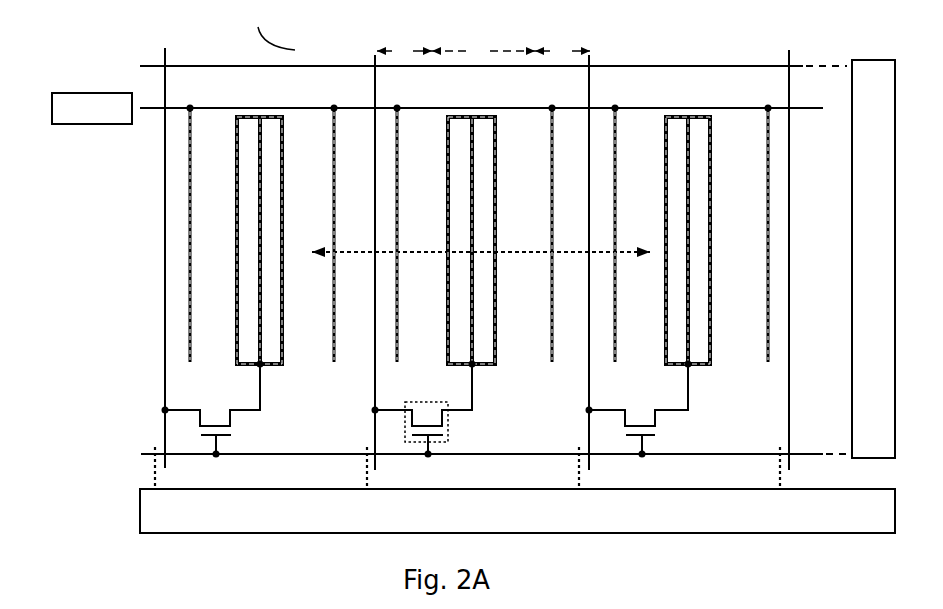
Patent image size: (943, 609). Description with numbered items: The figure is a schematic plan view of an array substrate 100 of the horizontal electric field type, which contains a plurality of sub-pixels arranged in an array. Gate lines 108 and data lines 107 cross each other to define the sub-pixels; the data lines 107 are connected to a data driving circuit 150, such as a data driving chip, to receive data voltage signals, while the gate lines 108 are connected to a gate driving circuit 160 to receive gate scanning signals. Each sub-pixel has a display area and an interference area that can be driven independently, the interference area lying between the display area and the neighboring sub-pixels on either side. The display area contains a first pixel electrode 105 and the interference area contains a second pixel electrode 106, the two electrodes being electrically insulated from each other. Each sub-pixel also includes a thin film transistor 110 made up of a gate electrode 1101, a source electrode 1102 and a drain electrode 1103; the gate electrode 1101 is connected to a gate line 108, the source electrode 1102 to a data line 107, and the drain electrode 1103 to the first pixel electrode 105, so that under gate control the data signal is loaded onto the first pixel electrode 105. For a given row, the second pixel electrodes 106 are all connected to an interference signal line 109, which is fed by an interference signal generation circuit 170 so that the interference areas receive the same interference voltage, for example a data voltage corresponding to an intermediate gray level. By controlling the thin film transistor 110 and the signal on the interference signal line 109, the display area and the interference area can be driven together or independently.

The array substrate 100 is at (467, 251).
The data line 107 is at (165, 187).
The gate line 108 is at (503, 260).
The interference signal line 109 is at (425, 108).
The interference signal generation circuit 170 is at (92, 108).
The gate driving circuit 160 is at (873, 259).
The data driving circuit 150 is at (517, 511).
The second pixel electrode 106 is at (550, 127).
The first pixel electrode 105 is at (492, 364).
The thin film transistor 110 is at (425, 411).
The source electrode 1102 is at (410, 390).
The drain electrode 1103 is at (448, 417).
The gate electrode 1101 is at (437, 435).